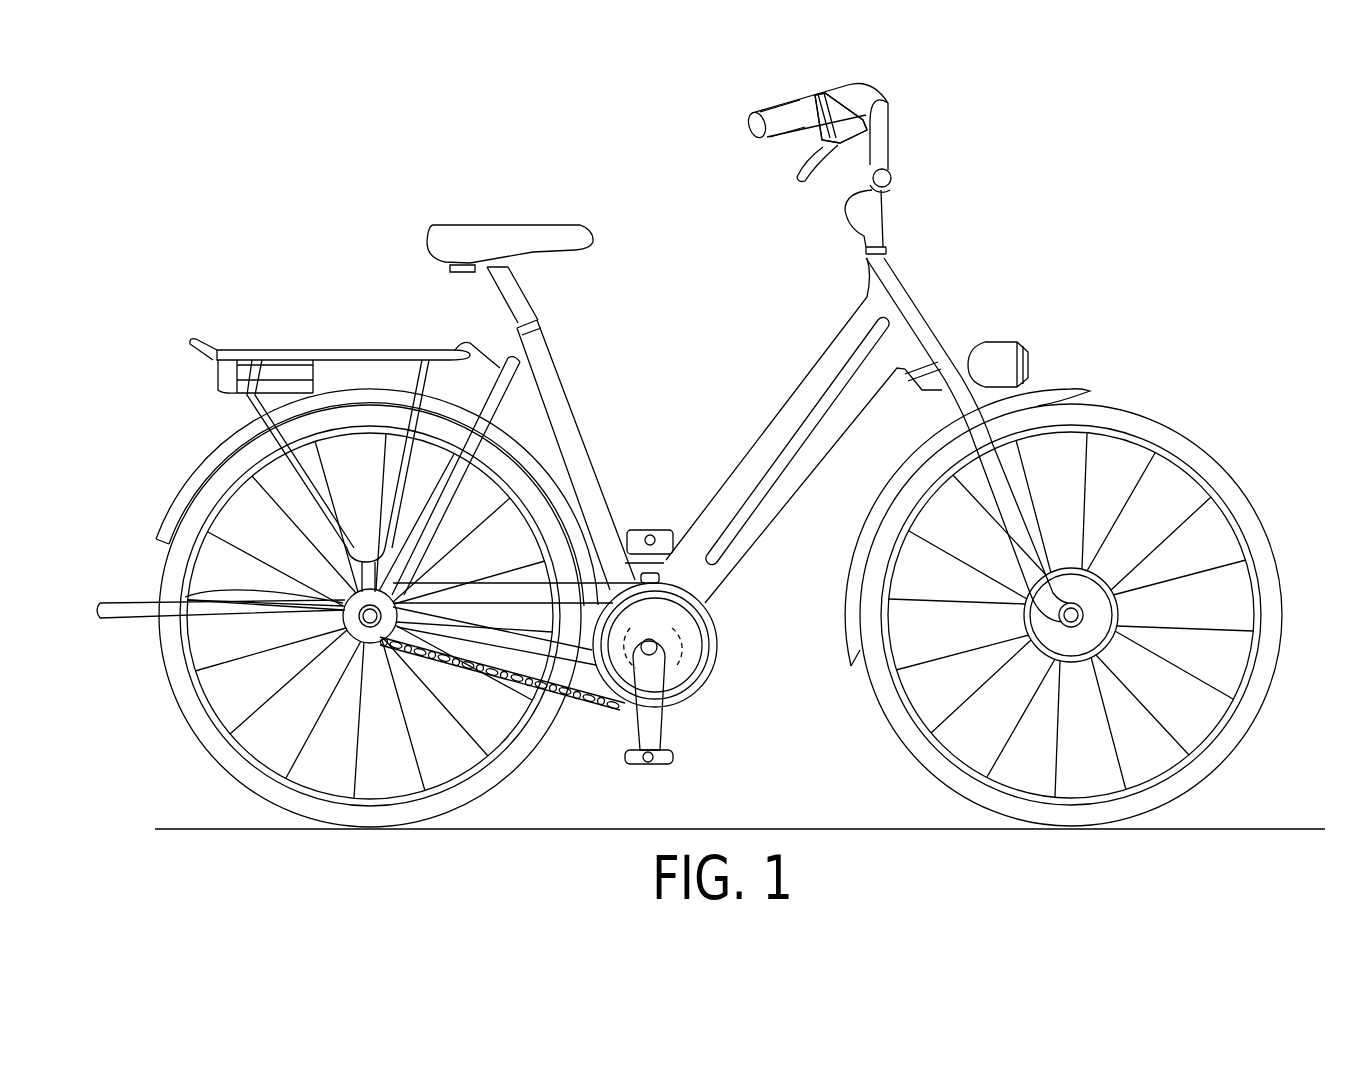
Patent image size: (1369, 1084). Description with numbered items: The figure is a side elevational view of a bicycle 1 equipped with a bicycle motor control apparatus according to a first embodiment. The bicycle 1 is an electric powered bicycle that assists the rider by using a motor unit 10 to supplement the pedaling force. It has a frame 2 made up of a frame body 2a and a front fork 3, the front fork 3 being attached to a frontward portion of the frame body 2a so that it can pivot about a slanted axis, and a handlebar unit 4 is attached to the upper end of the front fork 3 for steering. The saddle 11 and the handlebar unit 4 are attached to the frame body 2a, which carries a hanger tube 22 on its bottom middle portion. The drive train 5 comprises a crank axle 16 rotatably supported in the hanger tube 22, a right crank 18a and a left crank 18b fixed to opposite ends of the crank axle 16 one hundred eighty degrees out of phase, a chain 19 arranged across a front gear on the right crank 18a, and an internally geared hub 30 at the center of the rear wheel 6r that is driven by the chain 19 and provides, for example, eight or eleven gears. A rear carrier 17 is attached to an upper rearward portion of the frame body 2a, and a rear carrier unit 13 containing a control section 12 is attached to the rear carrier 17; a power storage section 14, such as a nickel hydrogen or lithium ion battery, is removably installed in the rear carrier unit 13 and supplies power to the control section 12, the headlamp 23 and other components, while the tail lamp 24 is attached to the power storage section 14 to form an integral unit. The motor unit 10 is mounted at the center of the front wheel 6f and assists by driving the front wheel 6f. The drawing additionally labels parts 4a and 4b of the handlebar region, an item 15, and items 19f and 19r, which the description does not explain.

The bicycle 1 is at (578, 172).
The frame 2 is at (846, 440).
The frame body 2a is at (737, 490).
The front fork 3 is at (920, 483).
The handlebar unit 4 is at (749, 168).
The head tube 4a is at (845, 198).
The handlebar stem 4b is at (873, 157).
The drive train 5 is at (611, 729).
The front wheel 6f is at (1220, 463).
The rear wheel 6r is at (190, 705).
The motor unit 10 is at (1070, 648).
The saddle 11 is at (487, 222).
The control section 12 is at (337, 377).
The rear carrier unit 13 is at (385, 360).
The power storage section 14 is at (290, 378).
The handlebar grip 15 is at (785, 115).
The crank axle 16 is at (652, 647).
The rear carrier 17 is at (410, 350).
The right crank 18a is at (650, 720).
The left crank 18b is at (637, 530).
The chain 19 is at (563, 690).
The front brake lever 19f is at (880, 92).
The rear brake lever 19r is at (841, 118).
The hanger tube 22 is at (700, 665).
The headlamp 23 is at (1020, 345).
The tail lamp 24 is at (213, 380).
The internally geared hub 30 is at (158, 598).